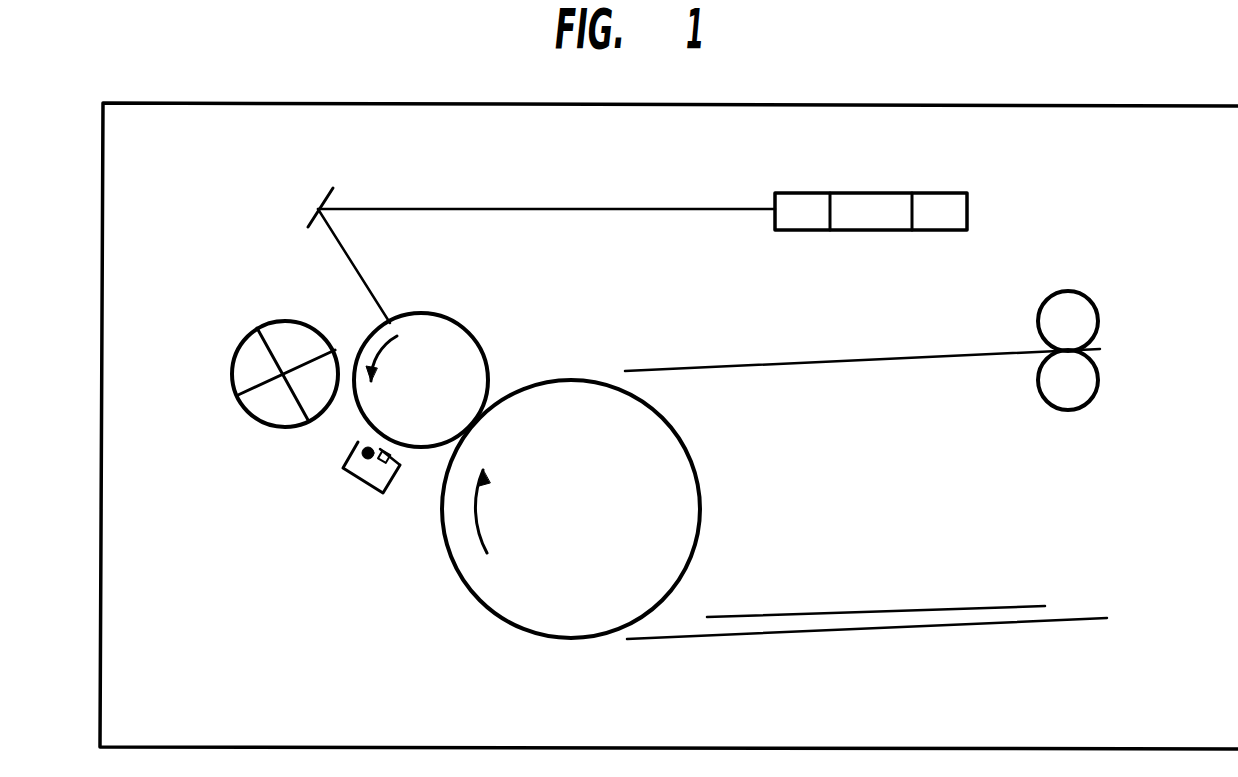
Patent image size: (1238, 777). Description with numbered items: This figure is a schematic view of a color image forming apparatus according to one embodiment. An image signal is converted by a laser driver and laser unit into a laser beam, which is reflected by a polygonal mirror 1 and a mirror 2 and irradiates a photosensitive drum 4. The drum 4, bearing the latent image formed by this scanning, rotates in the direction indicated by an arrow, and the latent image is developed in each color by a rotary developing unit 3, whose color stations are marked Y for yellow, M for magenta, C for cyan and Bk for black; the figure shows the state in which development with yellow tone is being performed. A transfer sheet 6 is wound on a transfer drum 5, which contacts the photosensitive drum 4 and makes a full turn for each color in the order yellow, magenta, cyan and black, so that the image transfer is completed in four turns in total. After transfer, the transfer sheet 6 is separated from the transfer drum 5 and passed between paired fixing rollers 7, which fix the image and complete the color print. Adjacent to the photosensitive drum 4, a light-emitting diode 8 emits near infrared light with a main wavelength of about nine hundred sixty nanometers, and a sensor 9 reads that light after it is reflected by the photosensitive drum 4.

The polygonal mirror 1 is at (878, 193).
The mirror 2 is at (315, 205).
The rotary developing unit 3 is at (245, 333).
The magenta M is at (298, 327).
The yellow Y is at (333, 357).
The cyan C is at (232, 377).
The black Bk is at (263, 407).
The photosensitive drum 4 is at (457, 323).
The transfer drum 5 is at (483, 602).
The transfer sheet 6 is at (884, 613).
The paired fixing rollers 7 is at (1098, 323).
The light-emitting diode 8 is at (352, 448).
The sensor 9 is at (390, 478).